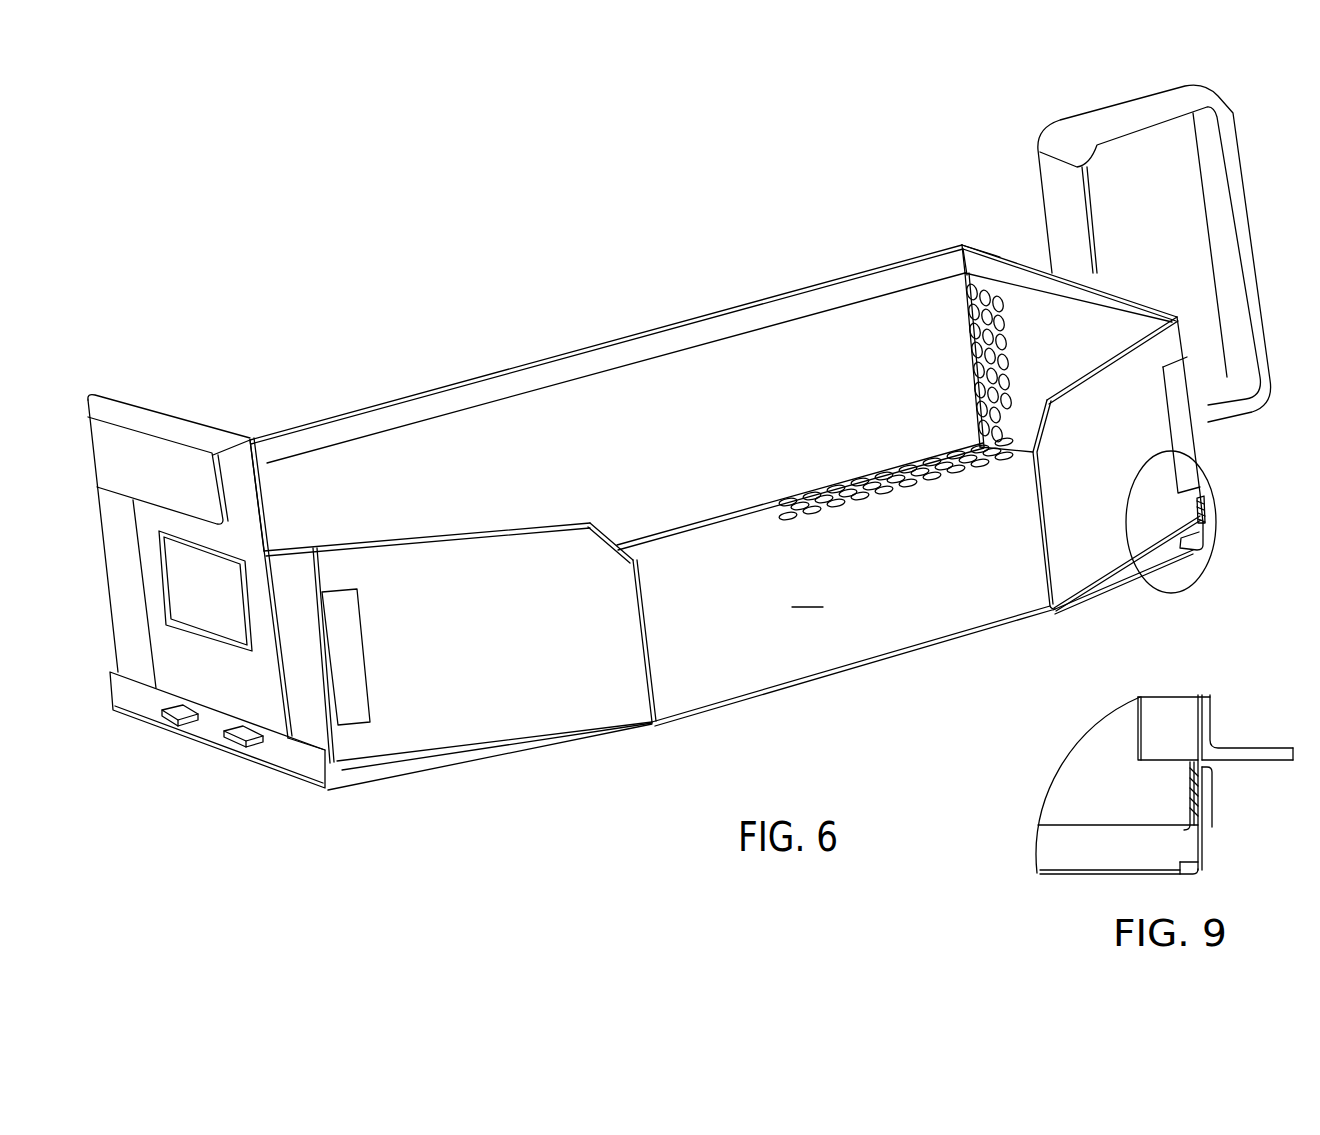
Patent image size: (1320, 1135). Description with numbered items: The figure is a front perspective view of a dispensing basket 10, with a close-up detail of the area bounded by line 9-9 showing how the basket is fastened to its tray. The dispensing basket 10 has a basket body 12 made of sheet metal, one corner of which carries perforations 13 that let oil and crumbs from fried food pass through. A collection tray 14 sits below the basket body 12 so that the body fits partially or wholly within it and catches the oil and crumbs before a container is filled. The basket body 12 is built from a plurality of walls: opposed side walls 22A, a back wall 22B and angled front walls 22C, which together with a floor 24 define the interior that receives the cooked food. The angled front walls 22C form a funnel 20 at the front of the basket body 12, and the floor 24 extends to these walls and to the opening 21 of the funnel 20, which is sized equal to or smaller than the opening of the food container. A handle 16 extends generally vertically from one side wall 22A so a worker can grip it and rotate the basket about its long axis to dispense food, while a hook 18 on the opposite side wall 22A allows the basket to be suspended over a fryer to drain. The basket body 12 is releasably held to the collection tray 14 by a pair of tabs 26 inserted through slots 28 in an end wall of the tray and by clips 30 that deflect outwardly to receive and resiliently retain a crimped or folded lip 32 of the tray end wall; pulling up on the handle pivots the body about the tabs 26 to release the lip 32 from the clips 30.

In FIG. 6, the dispensing basket 10 is at (334, 187).
In FIG. 6, the basket body 12 is at (608, 351).
In FIG. 6, the perforations 13 is at (964, 418).
In FIG. 6, the collection tray 14 is at (651, 703).
In FIG. 9, the collection tray 14 is at (1068, 862).
In FIG. 6, the handle 16 is at (1113, 118).
In FIG. 9, the handle 16 is at (1257, 750).
In FIG. 6, the hook 18 is at (147, 458).
In FIG. 6, the funnel 20 is at (601, 688).
In FIG. 6, the opening 21 is at (887, 584).
In FIG. 6, the side walls 22A is at (285, 575).
In FIG. 6, the back wall 22B is at (594, 400).
In FIG. 6, the angled front walls 22C is at (733, 527).
In FIG. 6, the floor 24 is at (977, 605).
In FIG. 6, the tabs 26 is at (226, 735).
In FIG. 6, the slots 28 is at (241, 728).
In FIG. 6, the clips 30 is at (1205, 505).
In FIG. 9, the clips 30 is at (1212, 773).
In FIG. 6, the lip 32 is at (1186, 550).
In FIG. 9, the lip 32 is at (1214, 800).
In FIG. 6, the detail view indicator 9 is at (1258, 455).